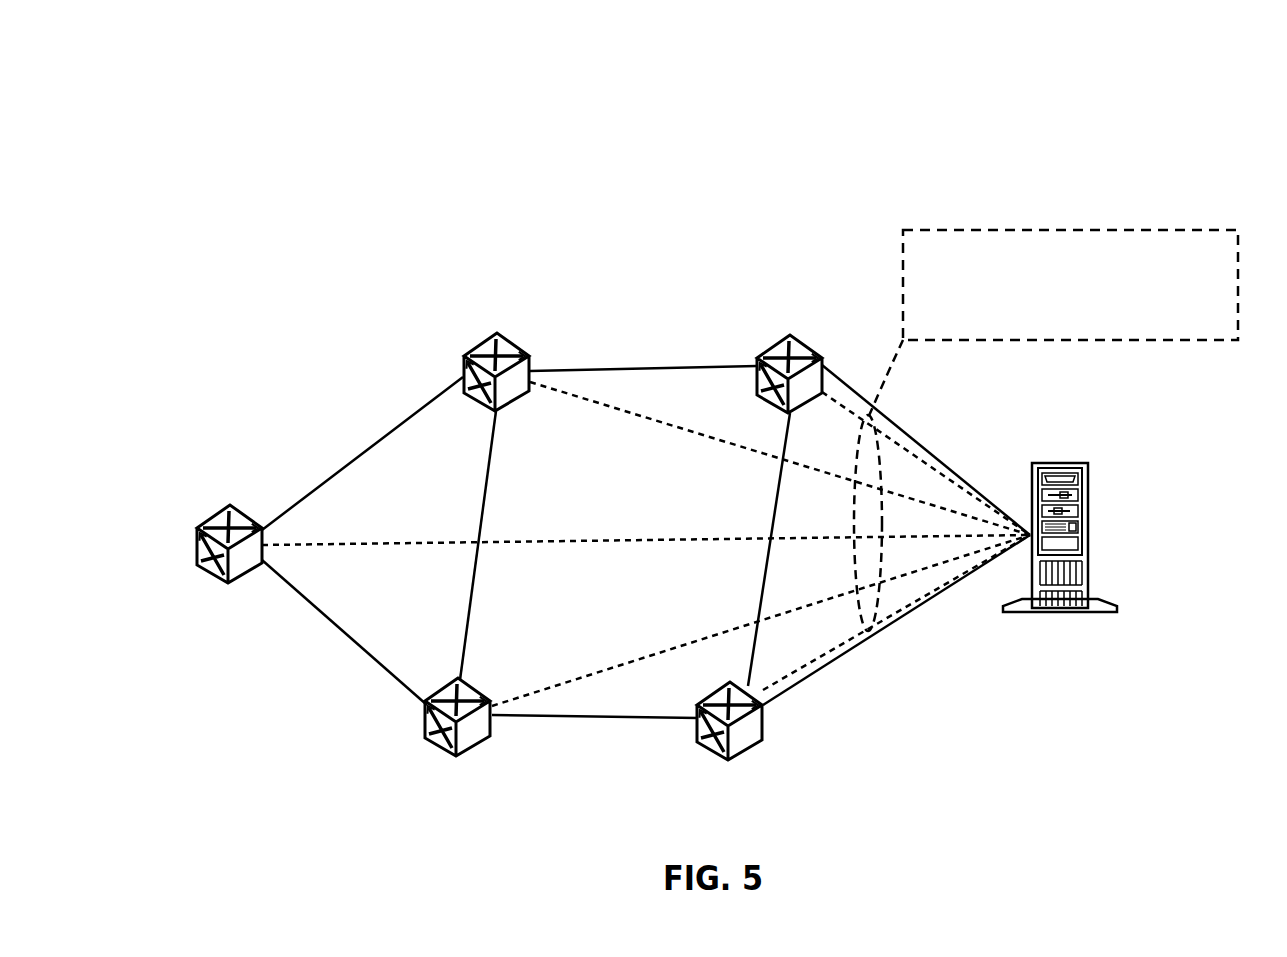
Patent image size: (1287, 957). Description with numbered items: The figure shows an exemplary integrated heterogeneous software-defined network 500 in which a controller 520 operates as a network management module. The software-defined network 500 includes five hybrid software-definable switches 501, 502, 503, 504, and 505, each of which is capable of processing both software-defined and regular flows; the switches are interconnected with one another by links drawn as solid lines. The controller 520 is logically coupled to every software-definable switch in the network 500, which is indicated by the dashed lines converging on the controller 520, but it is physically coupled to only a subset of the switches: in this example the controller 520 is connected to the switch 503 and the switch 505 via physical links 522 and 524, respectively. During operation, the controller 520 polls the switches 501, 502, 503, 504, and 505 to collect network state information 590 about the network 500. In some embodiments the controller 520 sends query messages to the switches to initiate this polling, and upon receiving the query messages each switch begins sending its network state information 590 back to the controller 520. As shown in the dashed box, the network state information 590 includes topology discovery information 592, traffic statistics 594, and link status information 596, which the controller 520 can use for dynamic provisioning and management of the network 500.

The software-defined network 500 is at (1125, 90).
The hybrid software-definable switch 501 is at (207, 568).
The hybrid software-definable switch 502 is at (482, 345).
The hybrid software-definable switch 503 is at (798, 340).
The hybrid software-definable switch 504 is at (476, 690).
The hybrid software-definable switch 505 is at (710, 745).
The controller 520 is at (1090, 497).
The physical link 522 is at (915, 440).
The physical link 524 is at (871, 636).
The network state information 590 is at (1085, 259).
The topology discovery information 592 is at (1071, 256).
The traffic statistics 594 is at (1071, 285).
The link status information 596 is at (1071, 315).